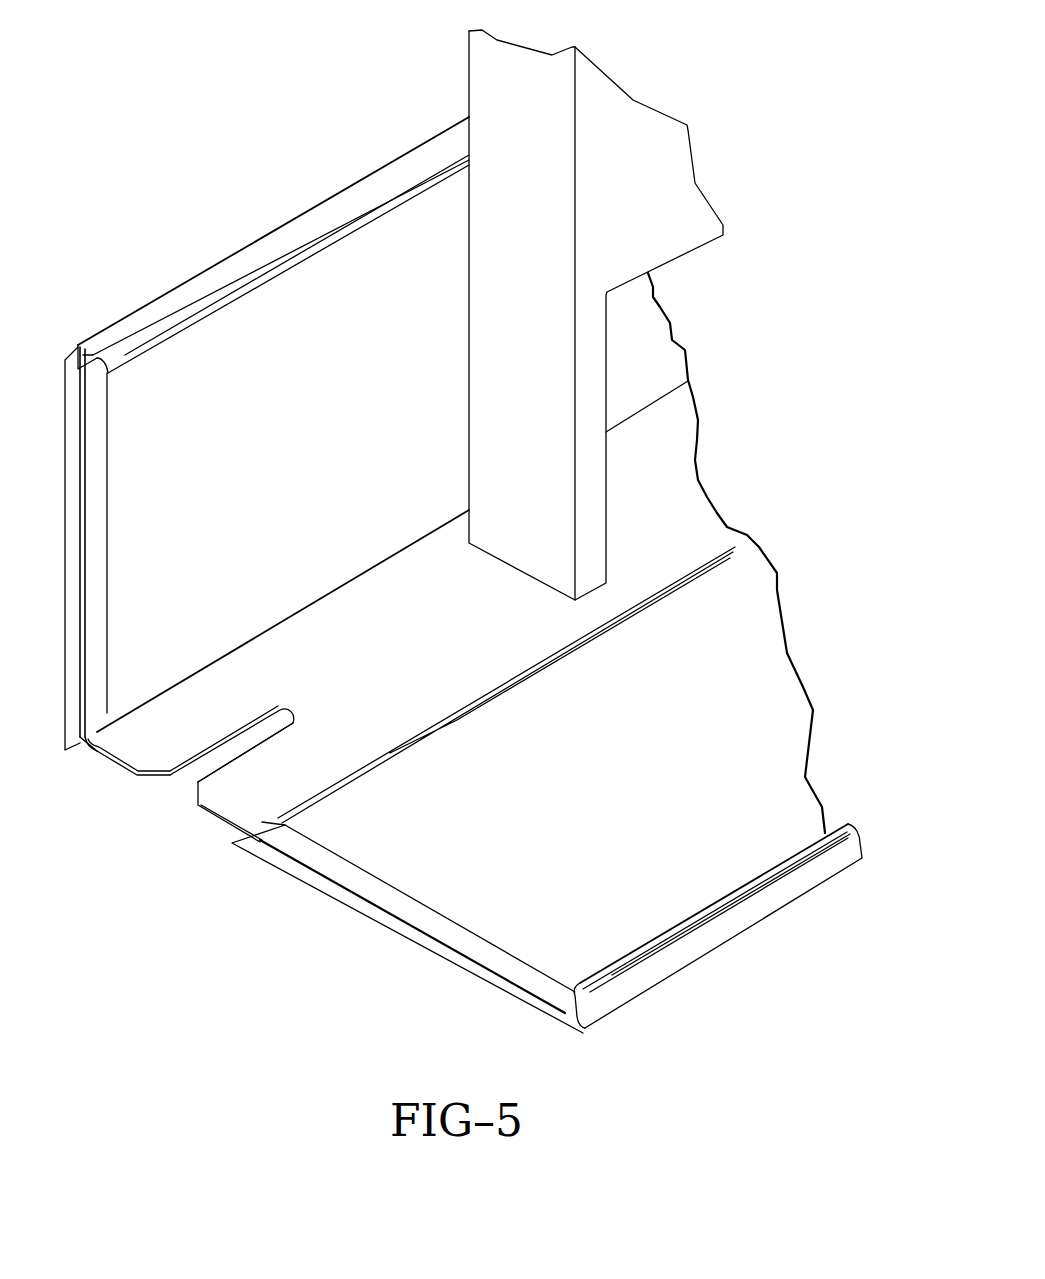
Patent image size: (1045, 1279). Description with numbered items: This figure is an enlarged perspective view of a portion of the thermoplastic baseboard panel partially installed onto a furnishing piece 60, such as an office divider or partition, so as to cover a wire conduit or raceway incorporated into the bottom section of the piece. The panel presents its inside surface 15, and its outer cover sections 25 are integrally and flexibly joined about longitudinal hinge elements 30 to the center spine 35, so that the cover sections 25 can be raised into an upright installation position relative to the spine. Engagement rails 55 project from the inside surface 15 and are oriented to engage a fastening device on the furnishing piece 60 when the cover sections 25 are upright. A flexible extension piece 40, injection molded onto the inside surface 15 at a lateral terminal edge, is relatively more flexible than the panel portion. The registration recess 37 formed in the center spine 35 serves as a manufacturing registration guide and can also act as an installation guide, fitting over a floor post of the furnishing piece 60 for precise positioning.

The inside surface 15 is at (314, 437).
The outer cover section 25 is at (196, 278).
The longitudinal hinge element 30 is at (97, 740).
The center spine 35 is at (113, 758).
The registration recess 37 is at (192, 772).
The flexible extension piece 40 is at (65, 447).
The engagement rail 55 is at (312, 224).
The furnishing piece 60 is at (633, 96).